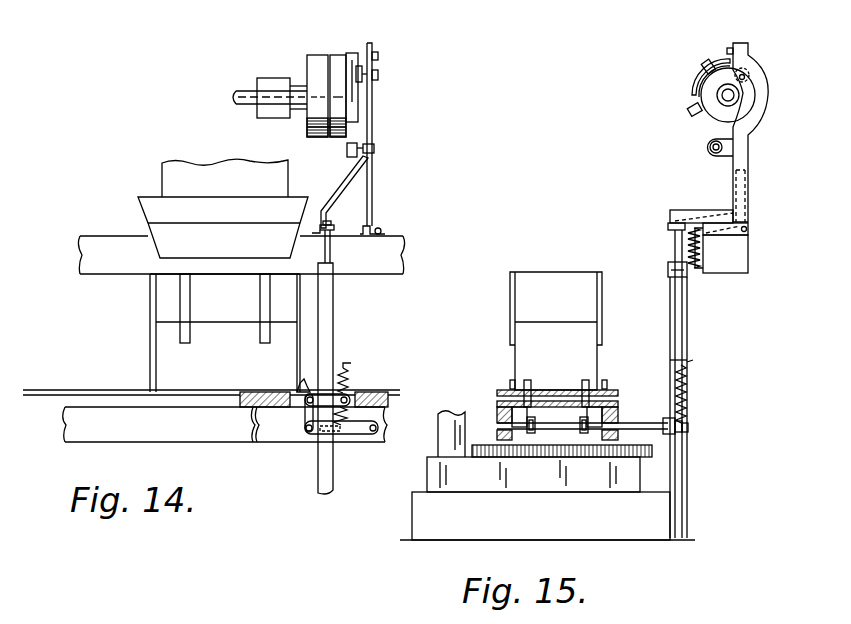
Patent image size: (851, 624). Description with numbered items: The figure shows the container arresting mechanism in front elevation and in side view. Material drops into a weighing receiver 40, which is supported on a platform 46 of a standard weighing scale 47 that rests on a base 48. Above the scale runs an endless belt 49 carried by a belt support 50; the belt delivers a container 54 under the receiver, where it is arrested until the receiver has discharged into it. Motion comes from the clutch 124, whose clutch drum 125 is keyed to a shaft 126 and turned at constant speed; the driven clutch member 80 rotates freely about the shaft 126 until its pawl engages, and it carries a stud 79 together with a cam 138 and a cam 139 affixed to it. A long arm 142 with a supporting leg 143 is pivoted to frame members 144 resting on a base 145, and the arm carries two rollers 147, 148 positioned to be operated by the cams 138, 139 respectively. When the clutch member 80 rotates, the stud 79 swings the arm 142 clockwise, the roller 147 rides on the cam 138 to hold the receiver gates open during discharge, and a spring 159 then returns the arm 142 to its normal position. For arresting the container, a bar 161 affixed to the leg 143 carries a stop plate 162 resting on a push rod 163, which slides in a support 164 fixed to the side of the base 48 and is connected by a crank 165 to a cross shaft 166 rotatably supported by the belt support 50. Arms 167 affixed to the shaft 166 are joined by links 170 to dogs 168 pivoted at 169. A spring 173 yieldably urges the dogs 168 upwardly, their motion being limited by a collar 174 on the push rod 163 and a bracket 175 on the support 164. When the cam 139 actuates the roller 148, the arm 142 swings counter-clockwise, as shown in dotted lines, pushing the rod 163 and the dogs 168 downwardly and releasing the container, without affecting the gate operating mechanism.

In FIG. 14, the weighing receiver 40 is at (224, 162).
In FIG. 15, the platform 46 is at (655, 452).
In FIG. 15, the weighing scale 47 is at (648, 482).
In FIG. 15, the base 48 is at (570, 525).
In FIG. 14, the endless belt 49 is at (46, 390).
In FIG. 15, the endless belt 49 is at (557, 398).
In FIG. 14, the belt support 50 is at (67, 418).
In FIG. 15, the belt support 50 is at (497, 420).
In FIG. 14, the container 54 is at (163, 351).
In FIG. 15, the container 54 is at (558, 331).
In FIG. 14, the stud 79 is at (377, 56).
In FIG. 15, the stud 79 is at (730, 50).
In FIG. 14, the driven clutch member 80 is at (348, 132).
In FIG. 15, the driven clutch member 80 is at (768, 96).
In FIG. 14, the clutch 124 is at (313, 44).
In FIG. 14, the clutch drum 125 is at (312, 63).
In FIG. 14, the shaft 126 is at (246, 92).
In FIG. 14, the cam 138 is at (357, 113).
In FIG. 15, the cam 138 is at (690, 111).
In FIG. 14, the cam 139 is at (350, 55).
In FIG. 15, the cam 139 is at (696, 63).
In FIG. 14, the long arm 142 is at (373, 184).
In FIG. 15, the long arm 142 is at (750, 137).
In FIG. 14, the supporting leg 143 is at (340, 190).
In FIG. 14, the frame members 144 is at (383, 231).
In FIG. 15, the frame members 144 is at (752, 228).
In FIG. 14, the base 145 is at (404, 259).
In FIG. 15, the base 145 is at (742, 256).
In FIG. 14, the roller 147 is at (363, 77).
In FIG. 15, the roller 147 is at (752, 77).
In FIG. 14, the roller 148 is at (347, 150).
In FIG. 15, the roller 148 is at (711, 151).
In FIG. 15, the spring 159 is at (688, 247).
In FIG. 15, the bar 161 is at (691, 210).
In FIG. 14, the stop plate 162 is at (334, 228).
In FIG. 15, the stop plate 162 is at (668, 227).
In FIG. 14, the push rod 163 is at (331, 247).
In FIG. 15, the push rod 163 is at (682, 308).
In FIG. 14, the support 164 is at (332, 297).
In FIG. 15, the support 164 is at (689, 334).
In FIG. 14, the crank 165 is at (343, 432).
In FIG. 15, the crank 165 is at (687, 434).
In FIG. 14, the cross shaft 166 is at (381, 429).
In FIG. 15, the cross shaft 166 is at (639, 426).
In FIG. 14, the arms 167 is at (308, 436).
In FIG. 15, the arms 167 is at (581, 435).
In FIG. 14, the dogs 168 is at (297, 386).
In FIG. 15, the dogs 168 is at (586, 383).
In FIG. 14, the pivot 169 is at (355, 395).
In FIG. 14, the links 170 is at (306, 415).
In FIG. 15, the links 170 is at (497, 417).
In FIG. 14, the spring 173 is at (346, 383).
In FIG. 15, the spring 173 is at (690, 402).
In FIG. 15, the collar 174 is at (669, 288).
In FIG. 15, the bracket 175 is at (668, 271).